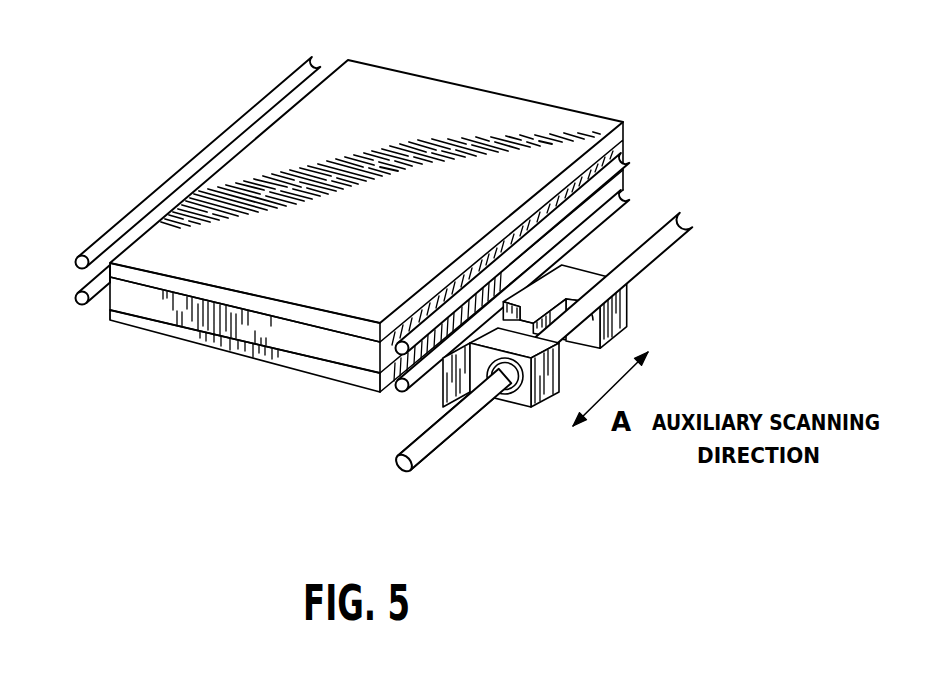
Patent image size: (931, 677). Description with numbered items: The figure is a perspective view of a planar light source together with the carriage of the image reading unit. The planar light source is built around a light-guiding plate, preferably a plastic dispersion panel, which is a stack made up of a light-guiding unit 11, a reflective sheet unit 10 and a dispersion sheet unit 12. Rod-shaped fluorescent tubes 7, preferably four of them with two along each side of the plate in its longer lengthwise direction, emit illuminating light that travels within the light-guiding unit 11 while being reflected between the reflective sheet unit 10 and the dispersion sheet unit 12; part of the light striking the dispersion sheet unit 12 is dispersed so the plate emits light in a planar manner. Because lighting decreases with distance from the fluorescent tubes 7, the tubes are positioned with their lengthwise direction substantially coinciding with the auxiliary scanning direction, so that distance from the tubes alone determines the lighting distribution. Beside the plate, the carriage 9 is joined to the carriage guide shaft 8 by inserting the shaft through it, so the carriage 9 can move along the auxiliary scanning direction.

The fluorescent tubes 7 is at (83, 282).
The carriage guide shaft 8 is at (443, 459).
The carriage 9 is at (545, 360).
The reflective sheet unit 10 is at (433, 105).
The light-guiding unit 11 is at (150, 306).
The dispersion sheet unit 12 is at (286, 362).